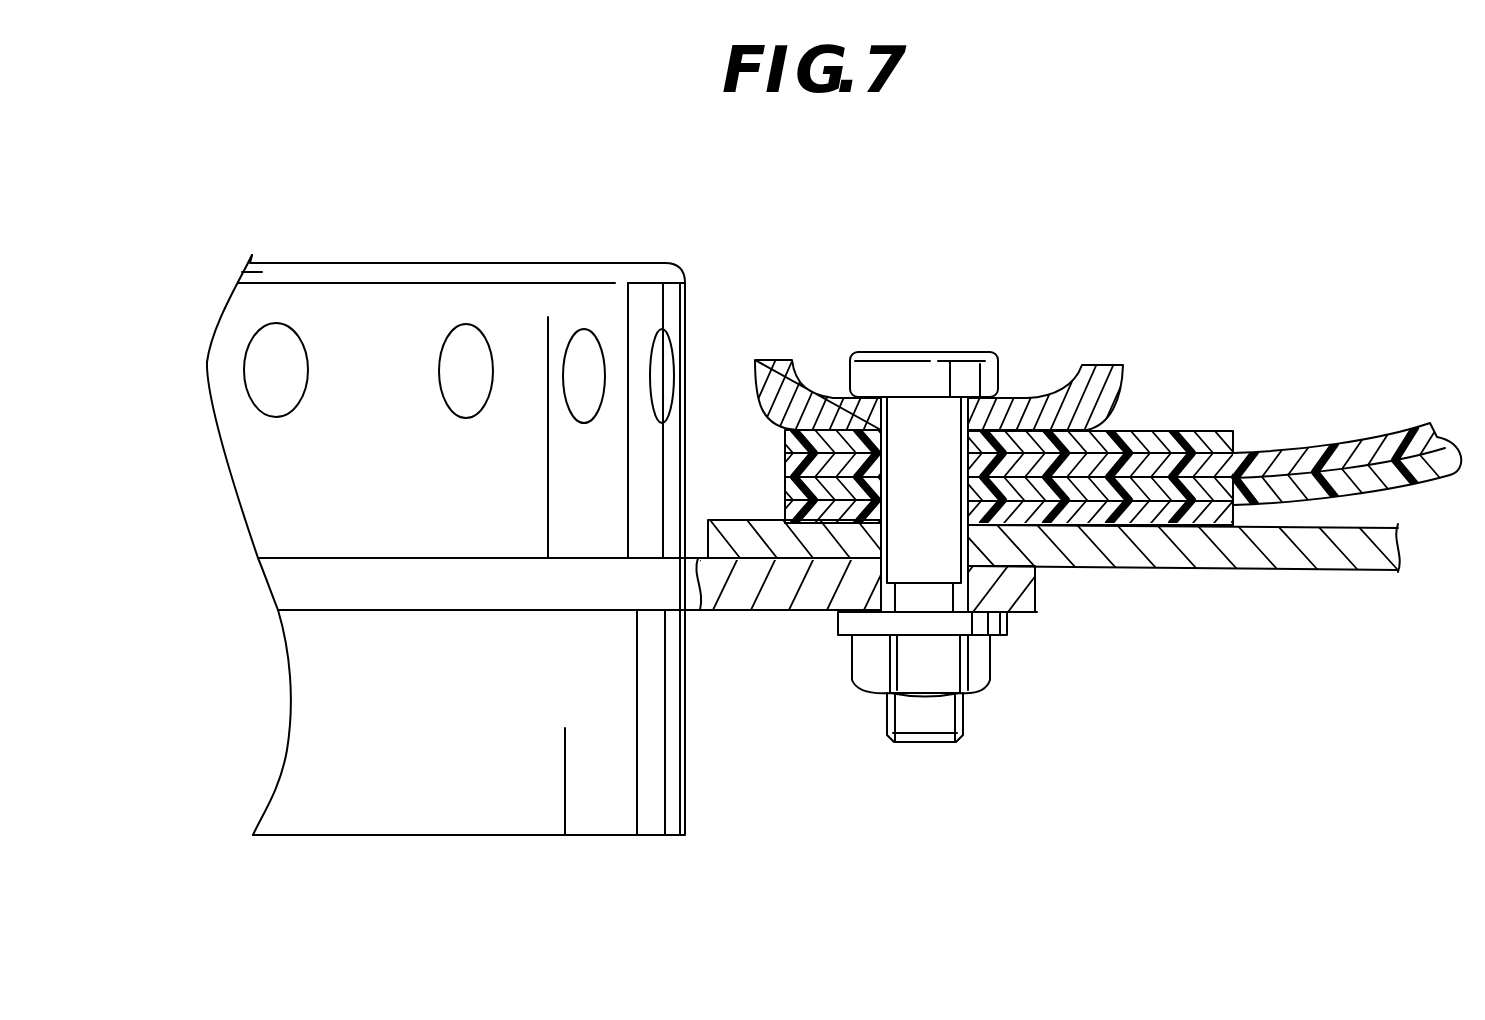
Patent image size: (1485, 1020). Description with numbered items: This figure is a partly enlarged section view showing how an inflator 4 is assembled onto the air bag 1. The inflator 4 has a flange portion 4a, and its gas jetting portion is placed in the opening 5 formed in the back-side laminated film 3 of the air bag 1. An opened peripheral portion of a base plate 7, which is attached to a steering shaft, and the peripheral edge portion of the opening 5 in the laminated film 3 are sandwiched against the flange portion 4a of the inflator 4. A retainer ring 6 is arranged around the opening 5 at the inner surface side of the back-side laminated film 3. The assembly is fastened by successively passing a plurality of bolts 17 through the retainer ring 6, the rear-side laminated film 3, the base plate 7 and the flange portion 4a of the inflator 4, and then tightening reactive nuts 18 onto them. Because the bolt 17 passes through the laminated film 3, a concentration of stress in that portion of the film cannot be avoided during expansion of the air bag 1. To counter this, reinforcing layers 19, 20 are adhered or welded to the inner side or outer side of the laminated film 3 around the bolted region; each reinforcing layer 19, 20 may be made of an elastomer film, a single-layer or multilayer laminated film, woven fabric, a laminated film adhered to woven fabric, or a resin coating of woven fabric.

The air bag 1 is at (1313, 273).
The back-side laminated film 3 is at (1367, 445).
The inflator 4 is at (445, 252).
The flange portion 4a is at (473, 595).
The opening 5 is at (735, 480).
The retainer ring 6 is at (1040, 407).
The base plate 7 is at (1323, 555).
The bolt 17 is at (945, 353).
The reactive nut 18 is at (867, 678).
The reinforcing layer 19 is at (1155, 432).
The reinforcing layer 20 is at (1205, 518).